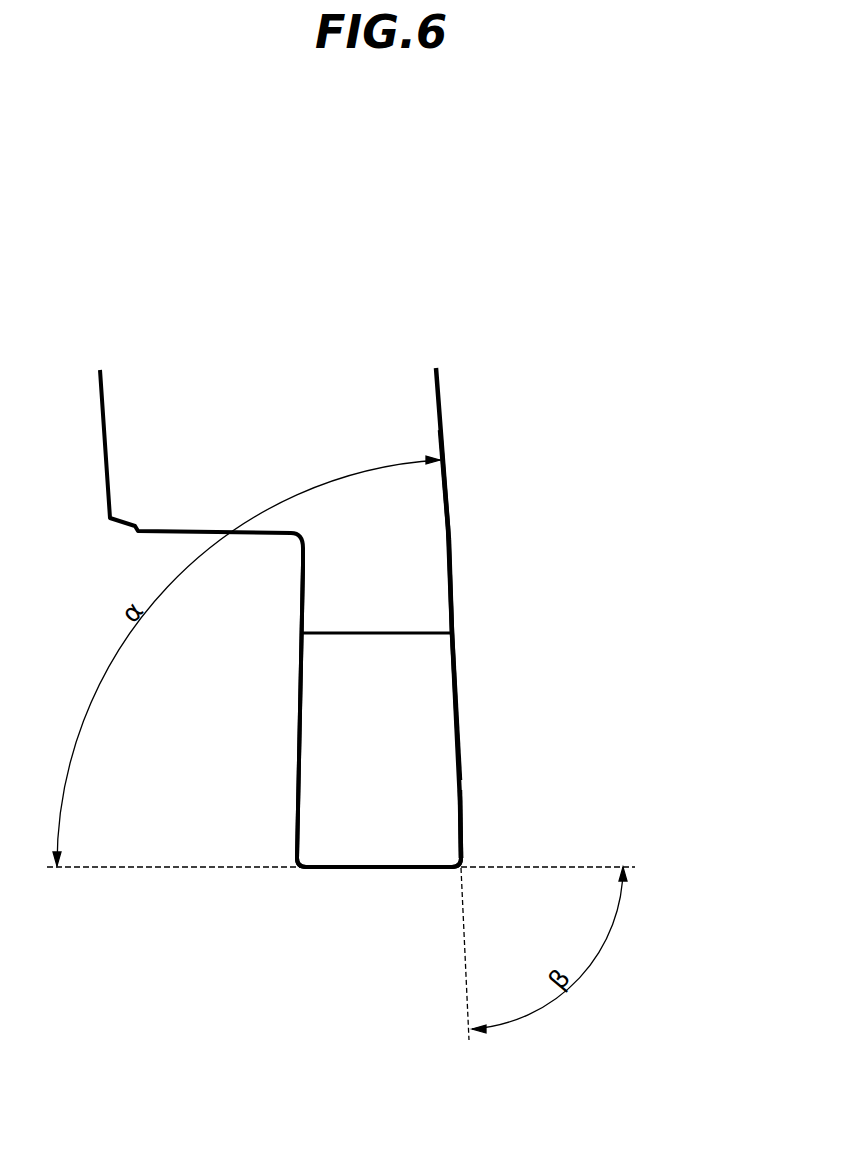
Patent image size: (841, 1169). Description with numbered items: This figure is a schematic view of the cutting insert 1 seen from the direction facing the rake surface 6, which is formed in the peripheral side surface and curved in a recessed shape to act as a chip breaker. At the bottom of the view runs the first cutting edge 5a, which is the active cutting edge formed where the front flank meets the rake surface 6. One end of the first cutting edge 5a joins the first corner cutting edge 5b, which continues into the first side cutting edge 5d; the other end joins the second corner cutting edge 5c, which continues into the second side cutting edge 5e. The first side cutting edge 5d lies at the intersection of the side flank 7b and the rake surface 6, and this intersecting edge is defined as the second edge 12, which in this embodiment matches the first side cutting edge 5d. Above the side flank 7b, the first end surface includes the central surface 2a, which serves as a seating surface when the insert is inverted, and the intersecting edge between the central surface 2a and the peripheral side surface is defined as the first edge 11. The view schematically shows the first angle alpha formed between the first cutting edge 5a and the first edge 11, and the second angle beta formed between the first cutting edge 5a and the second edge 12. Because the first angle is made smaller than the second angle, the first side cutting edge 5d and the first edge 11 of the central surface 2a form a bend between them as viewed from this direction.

The cutting insert 1 is at (490, 397).
The first edge 11 is at (448, 525).
The central surface 2a is at (449, 545).
The side flank 7b is at (460, 770).
The second edge 12 is at (460, 783).
The first side cutting edge 5d is at (460, 807).
The rake surface 6 is at (370, 826).
The second side cutting edge 5e is at (297, 812).
The second corner cutting edge 5c is at (297, 867).
The first cutting edge 5a is at (368, 870).
The first corner cutting edge 5b is at (461, 870).